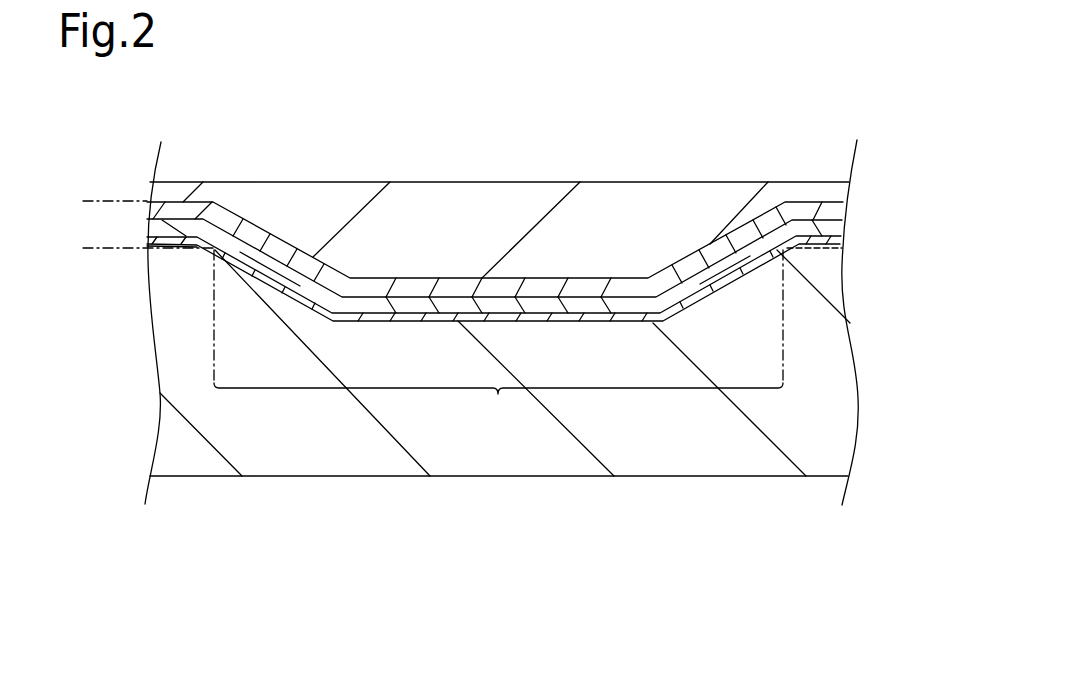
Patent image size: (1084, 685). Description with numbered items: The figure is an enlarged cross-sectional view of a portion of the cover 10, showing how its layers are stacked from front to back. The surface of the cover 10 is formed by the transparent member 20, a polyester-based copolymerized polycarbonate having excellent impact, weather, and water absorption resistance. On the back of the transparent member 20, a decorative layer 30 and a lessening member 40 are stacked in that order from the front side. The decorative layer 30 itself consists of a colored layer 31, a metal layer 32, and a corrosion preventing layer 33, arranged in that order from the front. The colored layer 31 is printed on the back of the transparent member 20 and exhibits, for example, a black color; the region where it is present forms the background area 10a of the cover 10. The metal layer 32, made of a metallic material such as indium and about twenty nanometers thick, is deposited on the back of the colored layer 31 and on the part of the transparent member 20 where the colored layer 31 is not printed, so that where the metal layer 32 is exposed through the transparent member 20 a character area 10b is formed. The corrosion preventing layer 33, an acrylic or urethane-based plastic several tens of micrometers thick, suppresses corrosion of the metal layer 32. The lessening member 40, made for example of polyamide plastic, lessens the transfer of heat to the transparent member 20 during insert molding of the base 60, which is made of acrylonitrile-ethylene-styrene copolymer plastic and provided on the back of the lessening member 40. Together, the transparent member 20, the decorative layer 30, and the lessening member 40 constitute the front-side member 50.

The cover 10 is at (489, 510).
The background area 10a is at (161, 273).
The character area 10b is at (498, 339).
The transparent member 20 is at (835, 388).
The decorative layer 30 is at (476, 263).
The colored layer 31 is at (526, 286).
The metal layer 32 is at (835, 237).
The corrosion preventing layer 33 is at (833, 230).
The lessening member 40 is at (835, 213).
The front-side member 50 is at (499, 323).
The base 60 is at (835, 191).